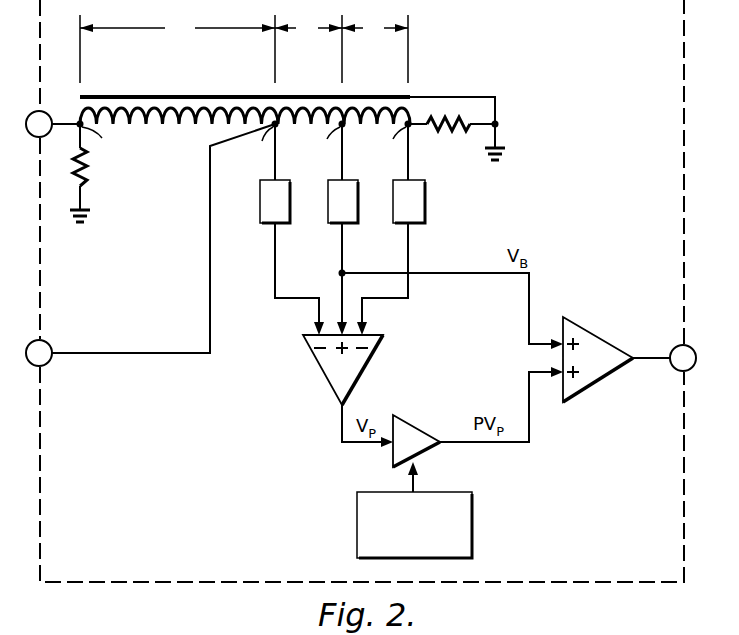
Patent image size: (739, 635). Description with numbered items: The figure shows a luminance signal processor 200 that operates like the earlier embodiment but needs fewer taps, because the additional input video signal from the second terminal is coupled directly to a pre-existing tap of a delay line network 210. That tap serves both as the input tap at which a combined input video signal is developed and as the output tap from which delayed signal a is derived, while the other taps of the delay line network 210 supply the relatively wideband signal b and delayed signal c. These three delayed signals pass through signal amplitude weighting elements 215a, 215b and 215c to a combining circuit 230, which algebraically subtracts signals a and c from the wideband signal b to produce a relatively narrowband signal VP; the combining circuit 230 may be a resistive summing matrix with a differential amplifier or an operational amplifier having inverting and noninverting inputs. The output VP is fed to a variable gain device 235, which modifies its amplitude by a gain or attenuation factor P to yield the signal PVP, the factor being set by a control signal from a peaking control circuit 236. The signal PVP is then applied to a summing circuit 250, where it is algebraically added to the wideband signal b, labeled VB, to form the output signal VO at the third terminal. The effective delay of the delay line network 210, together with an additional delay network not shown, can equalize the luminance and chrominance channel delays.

The luminance signal processor 200 is at (212, 526).
The delay line network 210 is at (248, 71).
The signal amplitude weighting element 215a is at (278, 225).
The signal amplitude weighting element 215b is at (345, 225).
The signal amplitude weighting element 215c is at (411, 225).
The combining circuit 230 is at (318, 369).
The variable gain device 235 is at (410, 425).
The peaking control circuit 236 is at (474, 521).
The summing circuit 250 is at (598, 385).